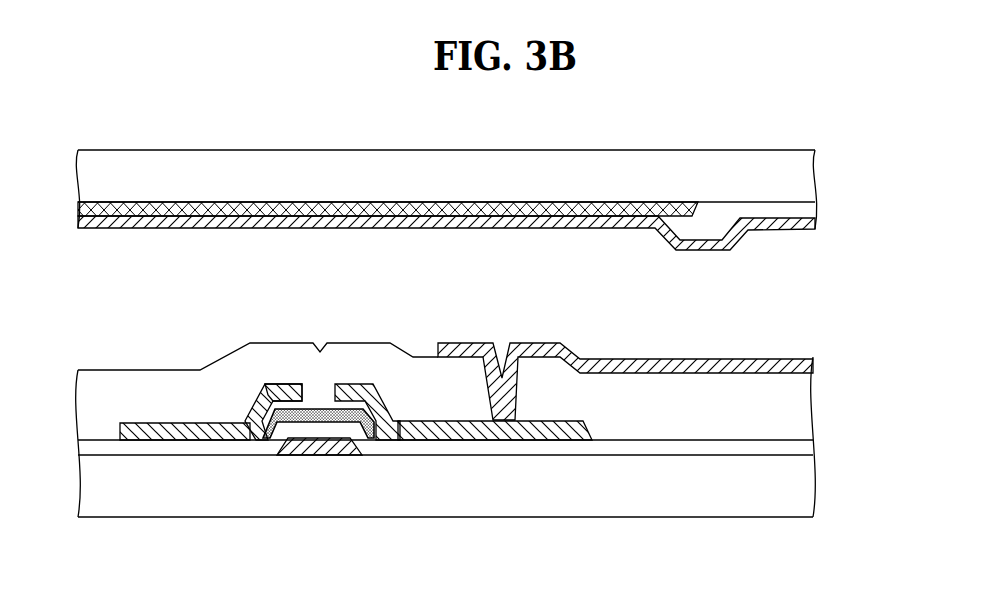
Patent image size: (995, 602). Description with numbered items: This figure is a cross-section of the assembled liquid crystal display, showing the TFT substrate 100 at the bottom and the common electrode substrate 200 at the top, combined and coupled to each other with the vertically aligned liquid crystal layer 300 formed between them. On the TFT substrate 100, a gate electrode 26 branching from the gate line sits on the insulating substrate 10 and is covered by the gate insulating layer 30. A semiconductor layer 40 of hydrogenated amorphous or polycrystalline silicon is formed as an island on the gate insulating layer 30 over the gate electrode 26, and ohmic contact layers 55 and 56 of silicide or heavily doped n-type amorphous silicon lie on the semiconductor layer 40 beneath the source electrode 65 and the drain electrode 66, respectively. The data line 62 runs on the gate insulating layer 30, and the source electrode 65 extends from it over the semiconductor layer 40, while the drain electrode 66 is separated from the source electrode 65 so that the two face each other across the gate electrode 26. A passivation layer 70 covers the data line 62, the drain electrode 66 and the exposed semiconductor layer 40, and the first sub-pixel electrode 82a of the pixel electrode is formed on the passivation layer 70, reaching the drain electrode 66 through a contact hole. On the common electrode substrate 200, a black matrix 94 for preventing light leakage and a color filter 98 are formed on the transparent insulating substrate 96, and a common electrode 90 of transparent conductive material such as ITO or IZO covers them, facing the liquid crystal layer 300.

The liquid crystal layer 300 is at (851, 289).
The common electrode substrate 200 is at (826, 150).
The insulating substrate 96 is at (268, 165).
The black matrix 94 is at (352, 200).
The color filter 98 is at (716, 208).
The common electrode 90 is at (467, 226).
The TFT substrate 100 is at (830, 517).
The insulating substrate 10 is at (495, 508).
The gate insulating layer 30 is at (570, 448).
The gate electrode 26 is at (318, 450).
The passivation layer 70 is at (103, 412).
The data line 62 is at (135, 440).
The source electrode 65 is at (248, 440).
The ohmic contact layer 55 is at (283, 395).
The semiconductor layer 40 is at (323, 415).
The ohmic contact layer 56 is at (350, 392).
The drain electrode 66 is at (399, 443).
The first sub-pixel electrode 82a is at (695, 356).